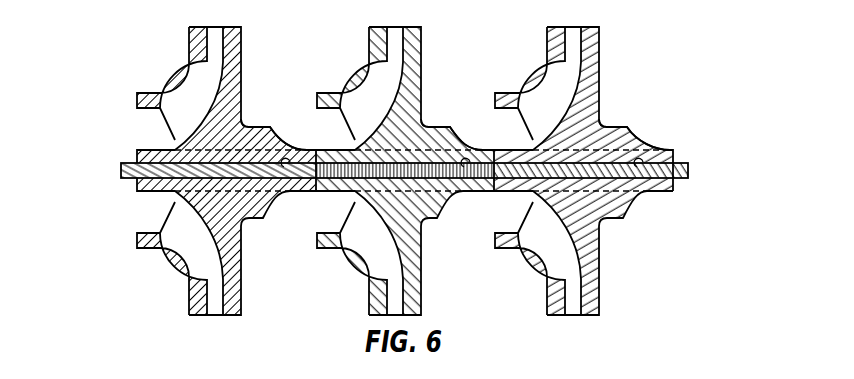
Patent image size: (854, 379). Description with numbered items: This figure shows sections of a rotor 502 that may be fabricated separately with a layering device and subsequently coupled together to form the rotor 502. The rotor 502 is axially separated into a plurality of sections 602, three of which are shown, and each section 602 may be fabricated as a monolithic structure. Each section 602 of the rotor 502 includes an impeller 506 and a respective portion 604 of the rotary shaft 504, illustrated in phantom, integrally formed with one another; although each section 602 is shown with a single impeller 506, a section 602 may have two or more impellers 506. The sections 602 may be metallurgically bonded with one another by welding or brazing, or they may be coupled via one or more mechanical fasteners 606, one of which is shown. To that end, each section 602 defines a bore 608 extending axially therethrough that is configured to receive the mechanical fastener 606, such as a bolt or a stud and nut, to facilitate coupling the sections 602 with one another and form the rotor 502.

The rotor 502 is at (389, 157).
The rotary shaft 504 is at (673, 152).
The impeller 506 is at (232, 26).
The section 602 is at (258, 116).
The portion of the rotary shaft 604 is at (248, 184).
The mechanical fastener 606 is at (131, 178).
The bore 608 is at (290, 162).